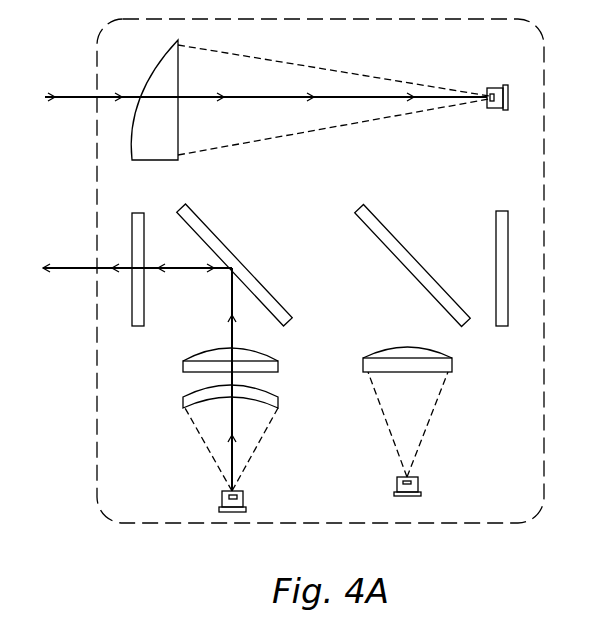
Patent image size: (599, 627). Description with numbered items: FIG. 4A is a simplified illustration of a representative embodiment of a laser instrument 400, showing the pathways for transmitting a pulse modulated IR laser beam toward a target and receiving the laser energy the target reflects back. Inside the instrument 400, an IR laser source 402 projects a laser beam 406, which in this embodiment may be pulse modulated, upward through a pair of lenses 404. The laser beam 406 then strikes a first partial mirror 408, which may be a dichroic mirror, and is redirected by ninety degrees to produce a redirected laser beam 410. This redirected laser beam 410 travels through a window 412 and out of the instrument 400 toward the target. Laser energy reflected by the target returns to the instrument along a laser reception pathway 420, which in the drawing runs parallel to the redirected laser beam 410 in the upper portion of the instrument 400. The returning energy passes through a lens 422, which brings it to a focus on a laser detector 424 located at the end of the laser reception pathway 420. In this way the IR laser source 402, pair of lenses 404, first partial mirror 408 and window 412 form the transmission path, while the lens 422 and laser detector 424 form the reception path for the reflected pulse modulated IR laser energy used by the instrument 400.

The instrument 400 is at (468, 19).
The IR laser source 402 is at (245, 501).
The pair of lenses 404 is at (183, 363).
The laser beam 406 is at (231, 301).
The first partial mirror 408 is at (203, 222).
The redirected laser beam 410 is at (66, 267).
The window 412 is at (137, 213).
The laser reception pathway 420 is at (70, 96).
The lens 422 is at (155, 70).
The laser detector 424 is at (493, 87).